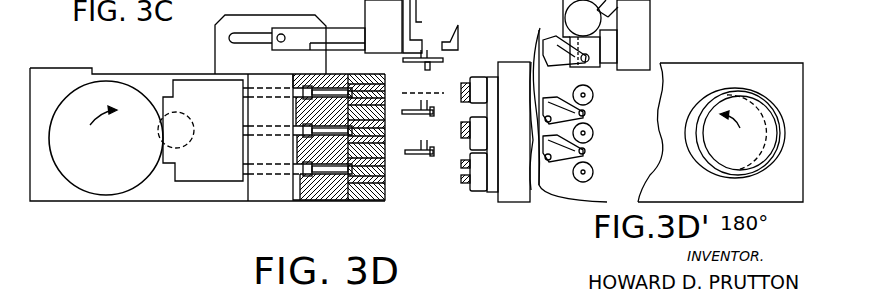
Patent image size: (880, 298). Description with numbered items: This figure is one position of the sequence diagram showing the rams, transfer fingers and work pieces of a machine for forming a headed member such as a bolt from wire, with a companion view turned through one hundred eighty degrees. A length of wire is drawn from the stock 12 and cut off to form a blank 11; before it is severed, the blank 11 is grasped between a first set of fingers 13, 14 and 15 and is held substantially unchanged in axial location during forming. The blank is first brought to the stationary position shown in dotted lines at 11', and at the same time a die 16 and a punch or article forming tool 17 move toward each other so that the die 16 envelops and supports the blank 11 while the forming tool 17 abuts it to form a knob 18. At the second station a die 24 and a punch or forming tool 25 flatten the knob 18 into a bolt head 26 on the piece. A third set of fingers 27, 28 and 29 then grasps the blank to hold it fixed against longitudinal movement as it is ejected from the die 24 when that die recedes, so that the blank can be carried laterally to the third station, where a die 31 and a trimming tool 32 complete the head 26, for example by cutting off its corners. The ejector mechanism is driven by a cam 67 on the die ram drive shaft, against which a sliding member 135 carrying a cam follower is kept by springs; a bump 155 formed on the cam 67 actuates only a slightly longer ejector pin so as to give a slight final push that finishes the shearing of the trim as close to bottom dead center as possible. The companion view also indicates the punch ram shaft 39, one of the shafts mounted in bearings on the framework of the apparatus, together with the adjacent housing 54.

In FIG. 3D, the cam 67 is at (104, 88).
In FIG. 3D, the bump 155 is at (93, 202).
In FIG. 3D, the sliding member 135 is at (211, 172).
In FIG. 3D, the stock 12 is at (347, 44).
In FIG. 3D, the finger 13 is at (425, 52).
In FIG. 3D, the finger 15 is at (431, 58).
In FIG. 3D, the die 16 is at (387, 80).
In FIG. 3D, the finger 14 is at (428, 63).
In FIG. 3D, the blank 11 is at (447, 79).
In FIG. 3D, the stationary position of blank 11' is at (480, 57).
In FIG. 3D, the knob 18 is at (437, 110).
In FIG. 3D, the punch or article forming tool 17 is at (440, 130).
In FIG. 3D, the finger 27 is at (417, 122).
In FIG. 3D, the finger 29 is at (441, 124).
In FIG. 3D, the finger 28 is at (424, 155).
In FIG. 3D, the die 24 is at (389, 137).
In FIG. 3D, the die 31 is at (387, 182).
In FIG. 3D, the bolt head 26 is at (431, 150).
In FIG. 3D, the punch or forming tool 25 is at (452, 150).
In FIG. 3D, the trimming tool 32 is at (455, 170).
In FIG. 3D', the housing 54 is at (667, 63).
In FIG. 3D', the punch ram shaft 39 is at (703, 98).